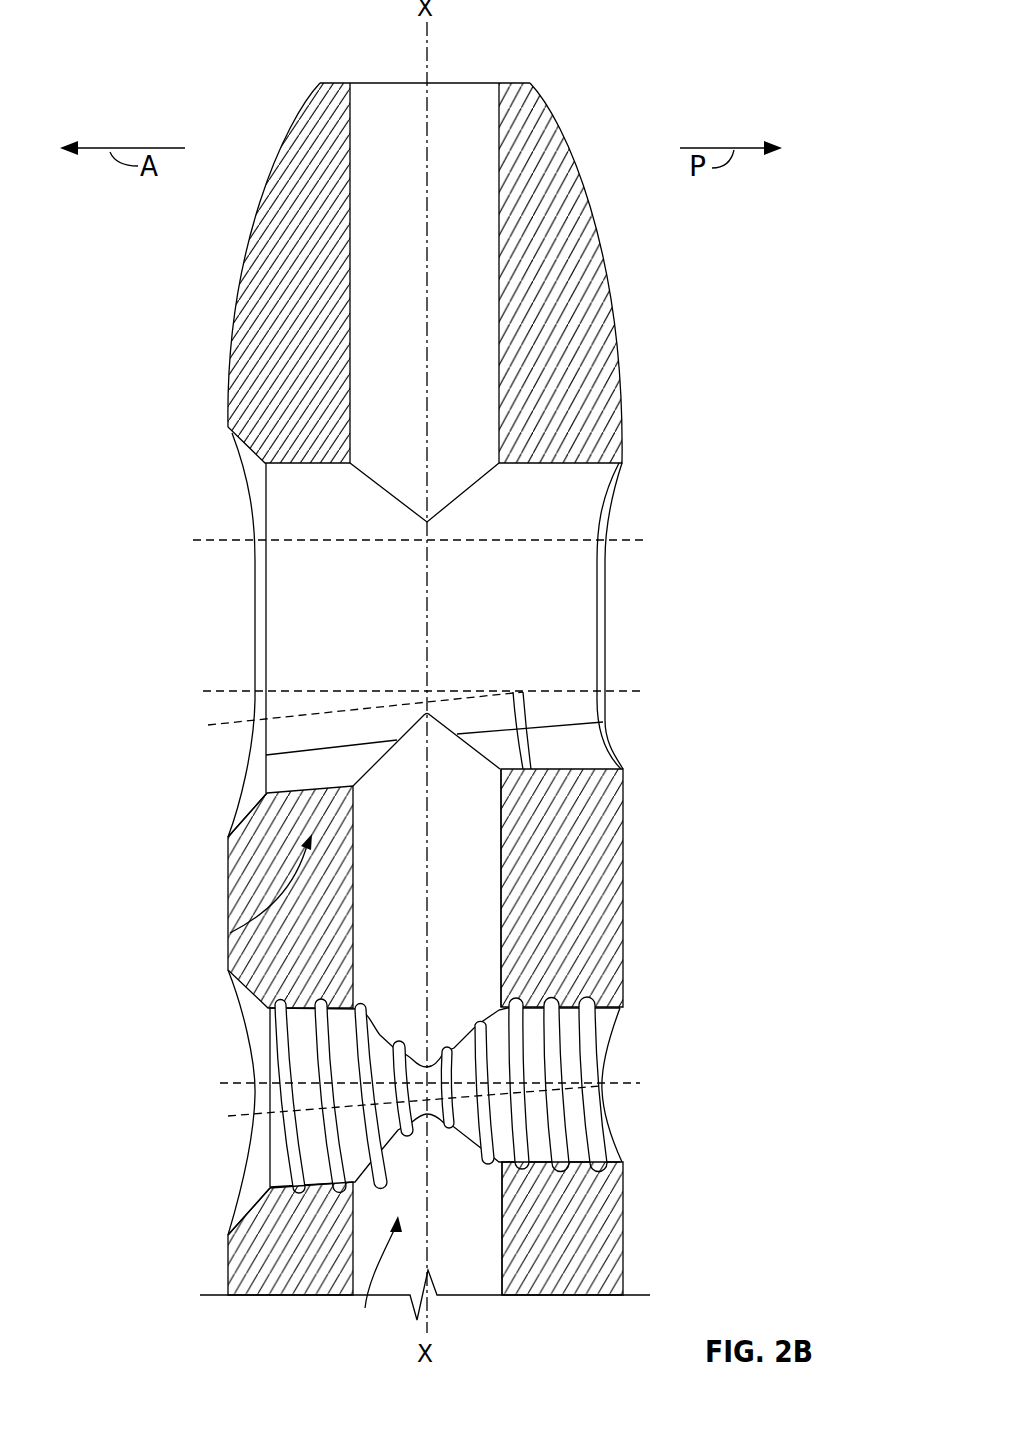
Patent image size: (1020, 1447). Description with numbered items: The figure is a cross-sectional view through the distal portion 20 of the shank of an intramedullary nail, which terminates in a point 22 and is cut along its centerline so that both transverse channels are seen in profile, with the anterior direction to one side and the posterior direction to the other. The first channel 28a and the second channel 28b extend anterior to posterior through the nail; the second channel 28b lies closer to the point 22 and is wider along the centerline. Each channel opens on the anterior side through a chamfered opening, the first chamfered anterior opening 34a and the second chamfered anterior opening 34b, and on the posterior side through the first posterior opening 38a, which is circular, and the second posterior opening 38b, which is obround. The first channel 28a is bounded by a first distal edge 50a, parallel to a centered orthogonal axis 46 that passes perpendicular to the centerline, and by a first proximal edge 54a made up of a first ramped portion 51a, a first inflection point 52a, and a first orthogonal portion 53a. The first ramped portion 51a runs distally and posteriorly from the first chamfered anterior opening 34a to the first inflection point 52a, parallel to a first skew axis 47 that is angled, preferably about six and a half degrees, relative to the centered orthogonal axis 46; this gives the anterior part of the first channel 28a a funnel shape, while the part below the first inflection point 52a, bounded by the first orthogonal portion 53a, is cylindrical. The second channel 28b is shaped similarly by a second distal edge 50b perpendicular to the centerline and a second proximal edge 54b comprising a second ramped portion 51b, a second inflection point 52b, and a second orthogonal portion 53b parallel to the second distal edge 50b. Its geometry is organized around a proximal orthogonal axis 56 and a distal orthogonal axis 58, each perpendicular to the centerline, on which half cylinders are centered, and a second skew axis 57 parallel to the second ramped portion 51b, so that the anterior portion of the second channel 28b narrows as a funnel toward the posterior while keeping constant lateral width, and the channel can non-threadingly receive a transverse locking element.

The distal portion 20 is at (634, 52).
The point 22 is at (340, 82).
The first channel 28a is at (185, 1180).
The second channel 28b is at (172, 617).
The first chamfered anterior opening 34a is at (230, 1233).
The second chamfered anterior opening 34b is at (240, 808).
The first posterior opening 38a is at (597, 1053).
The second posterior opening 38b is at (580, 517).
The centered orthogonal axis 46 is at (595, 1087).
The first skew axis 47 is at (228, 1116).
The first distal edge 50a is at (537, 1006).
The second distal edge 50b is at (560, 450).
The first ramped portion 51a is at (322, 1186).
The second ramped portion 51b is at (287, 793).
The first inflection point 52a is at (502, 1170).
The second inflection point 52b is at (487, 780).
The first orthogonal portion 53a is at (577, 1162).
The second orthogonal portion 53b is at (593, 770).
The first proximal edge 54a is at (373, 1280).
The second proximal edge 54b is at (230, 933).
The proximal orthogonal axis 56 is at (577, 693).
The second skew axis 57 is at (208, 725).
The distal orthogonal axis 58 is at (208, 540).